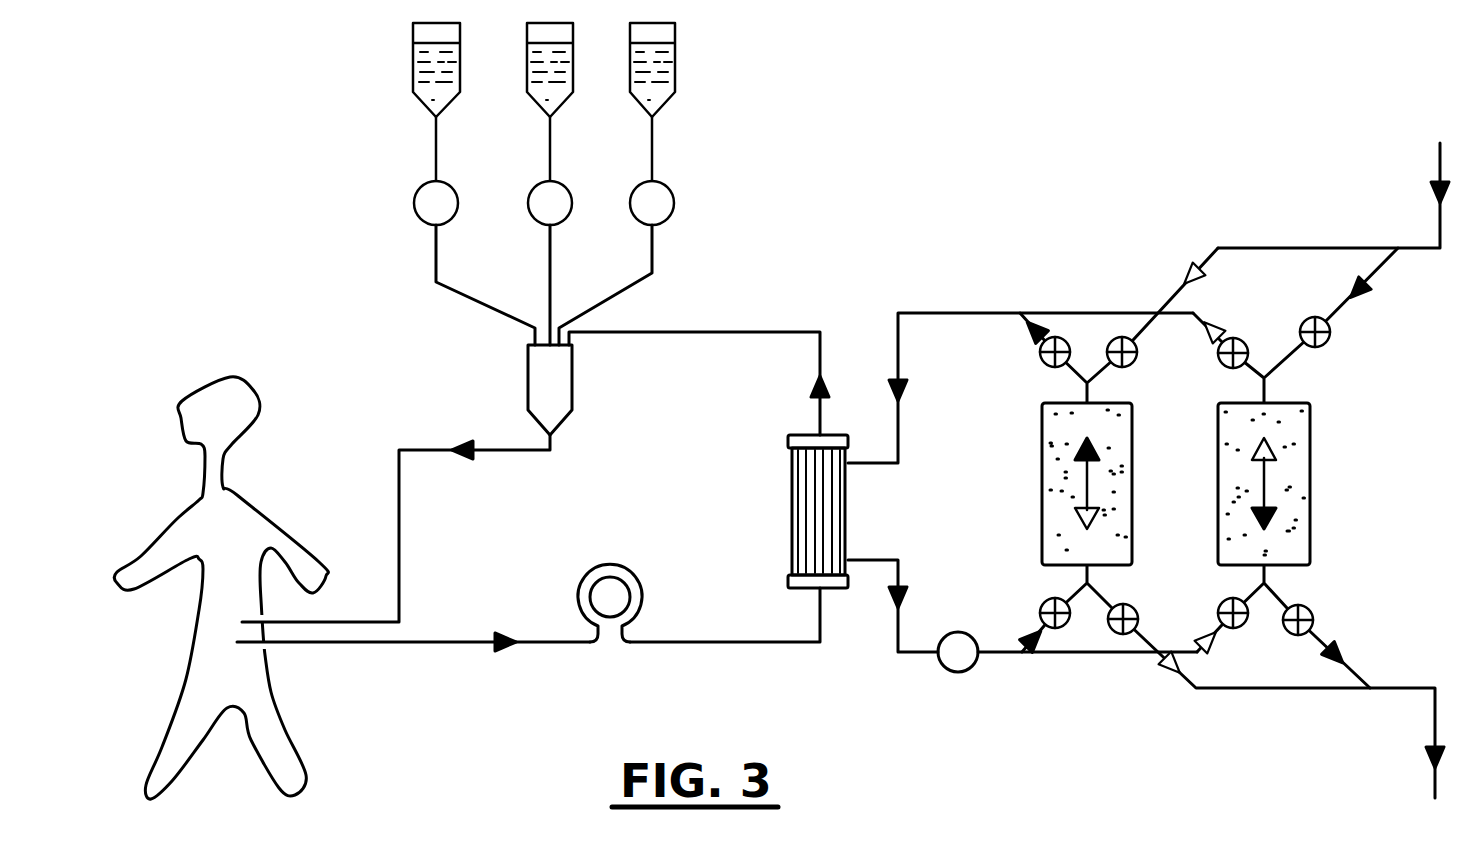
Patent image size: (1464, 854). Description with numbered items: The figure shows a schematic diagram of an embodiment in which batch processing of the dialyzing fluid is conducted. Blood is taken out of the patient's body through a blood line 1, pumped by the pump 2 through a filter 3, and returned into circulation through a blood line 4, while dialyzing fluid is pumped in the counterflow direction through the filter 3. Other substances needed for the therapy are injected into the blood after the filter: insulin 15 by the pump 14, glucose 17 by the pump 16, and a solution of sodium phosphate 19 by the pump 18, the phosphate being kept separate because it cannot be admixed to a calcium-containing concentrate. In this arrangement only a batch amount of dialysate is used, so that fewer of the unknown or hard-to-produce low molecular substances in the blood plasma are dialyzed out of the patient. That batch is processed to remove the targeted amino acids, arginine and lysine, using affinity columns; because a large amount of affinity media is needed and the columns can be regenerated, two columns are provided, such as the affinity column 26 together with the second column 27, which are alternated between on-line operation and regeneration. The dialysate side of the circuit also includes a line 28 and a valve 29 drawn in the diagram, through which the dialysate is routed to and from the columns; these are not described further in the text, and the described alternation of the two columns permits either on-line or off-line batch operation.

The blood line 1 is at (407, 643).
The pump 2 is at (602, 593).
The filter 3 is at (788, 488).
The blood line 4 is at (402, 535).
The pump 14 is at (657, 217).
The insulin 15 is at (668, 90).
The pump 16 is at (528, 207).
The glucose 17 is at (566, 90).
The pump 18 is at (413, 203).
The solution of sodium phosphate 19 is at (452, 90).
The affinity column 26 is at (1063, 523).
The regeneration column 27 is at (1297, 523).
The fresh dialysate inlet line 28 is at (1437, 158).
The valve 29 is at (1330, 340).